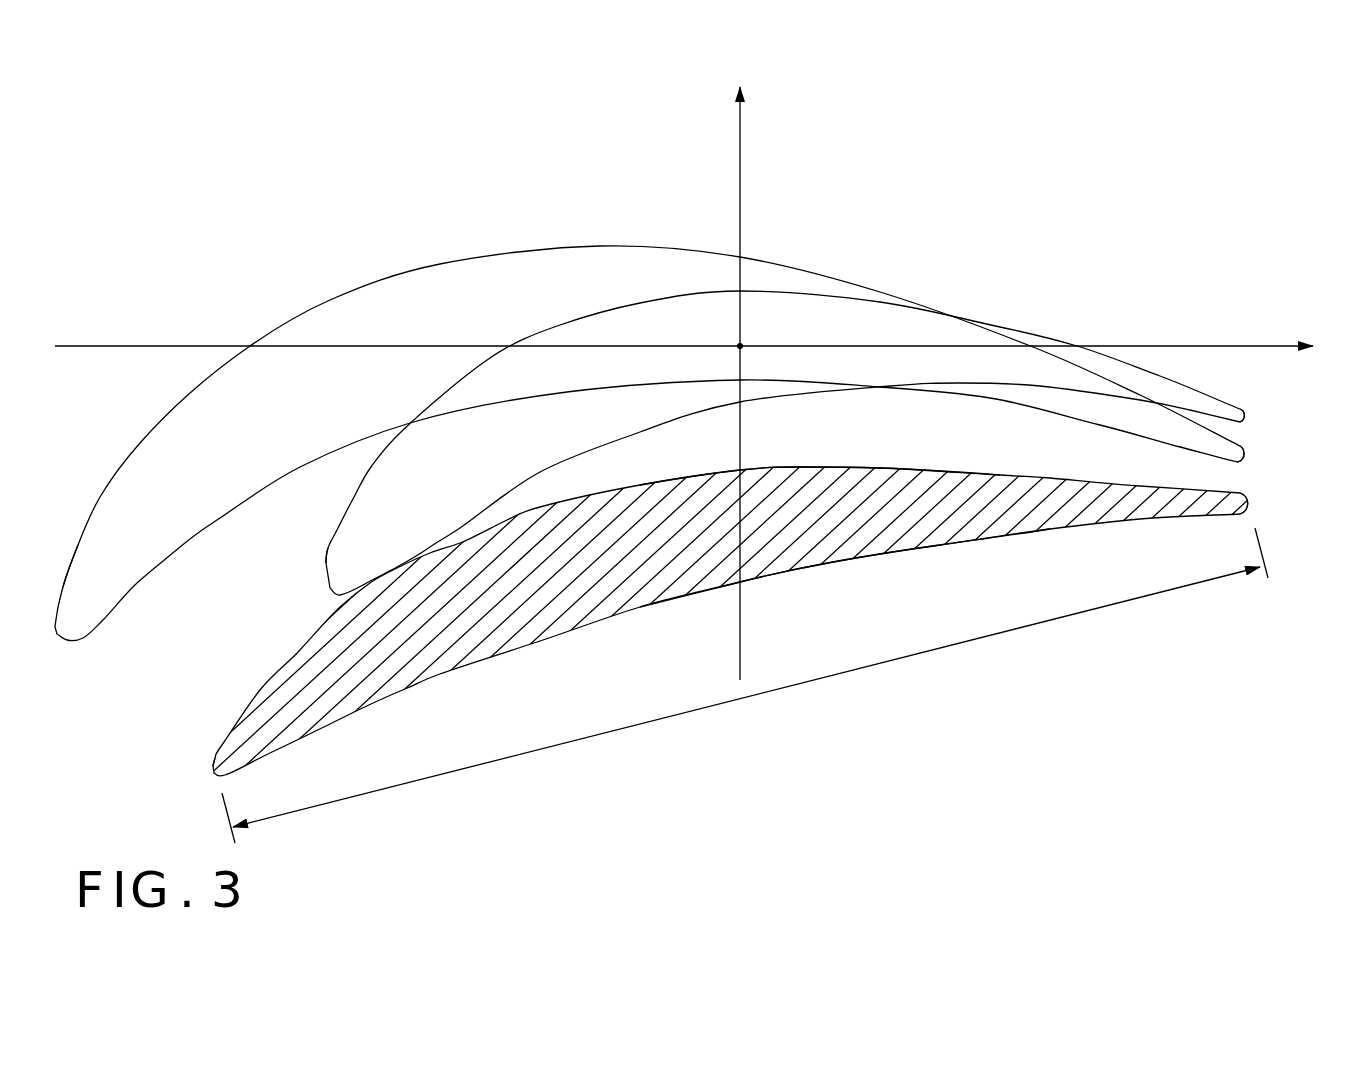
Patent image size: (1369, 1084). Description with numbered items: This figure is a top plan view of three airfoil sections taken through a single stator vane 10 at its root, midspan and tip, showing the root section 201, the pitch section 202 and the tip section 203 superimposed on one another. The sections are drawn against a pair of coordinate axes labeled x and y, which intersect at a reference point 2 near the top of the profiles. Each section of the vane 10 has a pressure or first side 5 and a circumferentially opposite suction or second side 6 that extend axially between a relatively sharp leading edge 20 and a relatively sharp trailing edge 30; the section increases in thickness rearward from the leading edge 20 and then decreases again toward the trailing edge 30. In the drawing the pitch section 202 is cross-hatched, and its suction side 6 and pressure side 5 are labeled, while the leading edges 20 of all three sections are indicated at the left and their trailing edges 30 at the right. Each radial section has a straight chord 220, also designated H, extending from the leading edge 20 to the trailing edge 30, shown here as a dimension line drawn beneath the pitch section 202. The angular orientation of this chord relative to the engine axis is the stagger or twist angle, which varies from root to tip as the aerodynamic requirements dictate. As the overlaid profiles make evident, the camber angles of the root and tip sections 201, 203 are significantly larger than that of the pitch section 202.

The origin / reference point 2 is at (741, 345).
The pressure side 5 is at (833, 563).
The suction side 6 is at (852, 470).
The stator vane 10 is at (669, 523).
The leading edge 20 is at (321, 578).
The trailing edge 30 is at (1250, 488).
The root section 201 is at (553, 430).
The pitch section 202 is at (458, 613).
The tip section 203 is at (378, 317).
The chord 220 is at (683, 713).
The chord H is at (838, 673).
The x axis x is at (1227, 346).
The y axis y is at (740, 150).